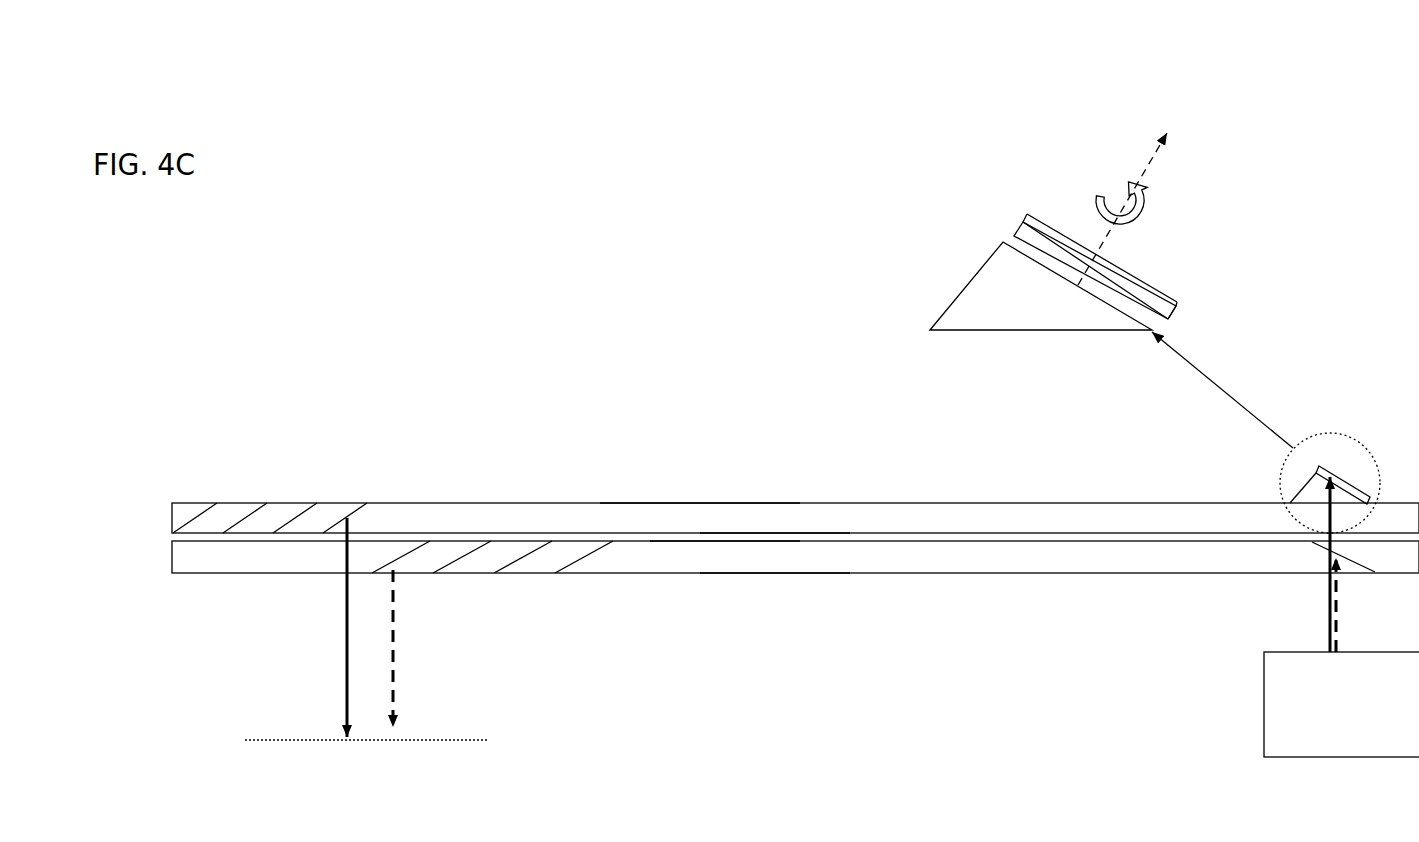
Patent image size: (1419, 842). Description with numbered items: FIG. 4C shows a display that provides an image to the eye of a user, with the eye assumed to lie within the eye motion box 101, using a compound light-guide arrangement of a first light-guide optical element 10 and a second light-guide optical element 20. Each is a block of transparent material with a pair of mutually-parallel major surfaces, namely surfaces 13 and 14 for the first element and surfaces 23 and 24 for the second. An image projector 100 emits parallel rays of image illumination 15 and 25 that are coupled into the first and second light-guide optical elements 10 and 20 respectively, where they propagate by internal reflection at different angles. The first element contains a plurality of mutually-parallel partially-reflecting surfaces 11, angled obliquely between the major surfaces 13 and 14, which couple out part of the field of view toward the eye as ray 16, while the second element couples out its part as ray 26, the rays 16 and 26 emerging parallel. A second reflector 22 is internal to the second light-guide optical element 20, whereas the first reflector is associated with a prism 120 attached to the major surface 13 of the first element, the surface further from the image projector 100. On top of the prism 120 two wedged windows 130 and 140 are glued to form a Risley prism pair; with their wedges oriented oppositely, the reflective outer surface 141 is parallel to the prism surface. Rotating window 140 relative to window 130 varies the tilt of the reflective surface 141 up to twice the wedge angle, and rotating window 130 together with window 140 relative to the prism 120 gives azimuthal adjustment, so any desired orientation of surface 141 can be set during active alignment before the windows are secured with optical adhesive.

The first light-guide optical element 10 is at (840, 523).
The first plurality of partially-reflecting surfaces 11 is at (247, 513).
The major surface of first LOE 13 is at (688, 503).
The major surface of first LOE 14 is at (770, 533).
The first ray of image illumination 15 is at (1311, 564).
The coupled-out ray from first LOE 16 is at (331, 627).
The second light-guide optical element 20 is at (814, 558).
The second reflector 22 is at (1355, 557).
The major surface of second LOE 23 is at (717, 545).
The major surface of second LOE 24 is at (760, 573).
The second ray of image illumination 25 is at (1357, 605).
The coupled-out ray from second LOE 26 is at (413, 648).
The image projector 100 is at (1341, 704).
The eye motion box 101 is at (366, 755).
The prism 120 is at (995, 293).
The first wedged window 130 is at (1012, 228).
The second wedged window 140 is at (1172, 310).
The reflective outer surface 141 is at (1158, 285).